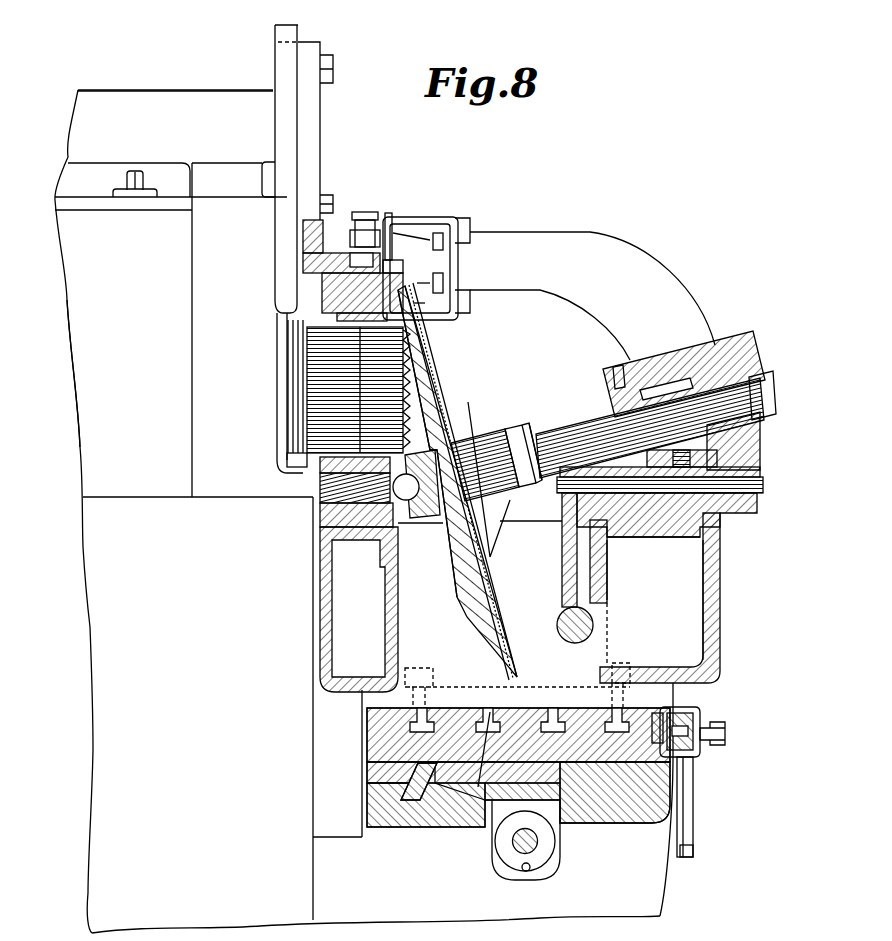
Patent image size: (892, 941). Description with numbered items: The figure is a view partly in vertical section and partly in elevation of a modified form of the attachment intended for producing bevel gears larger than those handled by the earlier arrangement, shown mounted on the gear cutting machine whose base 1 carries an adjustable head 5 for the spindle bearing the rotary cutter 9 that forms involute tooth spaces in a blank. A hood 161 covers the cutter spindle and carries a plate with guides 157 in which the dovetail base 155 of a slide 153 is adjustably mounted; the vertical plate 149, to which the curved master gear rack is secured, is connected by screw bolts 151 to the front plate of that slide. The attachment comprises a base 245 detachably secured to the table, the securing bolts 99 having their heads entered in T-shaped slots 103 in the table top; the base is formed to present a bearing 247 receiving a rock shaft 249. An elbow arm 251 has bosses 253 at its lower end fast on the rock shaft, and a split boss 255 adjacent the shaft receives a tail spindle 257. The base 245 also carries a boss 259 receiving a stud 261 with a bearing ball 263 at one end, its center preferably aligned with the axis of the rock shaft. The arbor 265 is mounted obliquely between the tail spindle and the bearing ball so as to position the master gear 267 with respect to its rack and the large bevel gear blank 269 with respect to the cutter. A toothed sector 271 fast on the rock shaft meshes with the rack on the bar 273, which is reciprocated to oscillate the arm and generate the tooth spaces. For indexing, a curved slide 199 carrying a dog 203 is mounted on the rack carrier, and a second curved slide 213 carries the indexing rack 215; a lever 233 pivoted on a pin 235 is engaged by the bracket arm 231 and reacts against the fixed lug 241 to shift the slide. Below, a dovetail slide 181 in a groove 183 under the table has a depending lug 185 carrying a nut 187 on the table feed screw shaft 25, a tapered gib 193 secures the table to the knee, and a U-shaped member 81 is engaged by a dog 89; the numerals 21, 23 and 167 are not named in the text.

The base 1 is at (90, 547).
The adjustable head 5 is at (702, 715).
The rotary cutter 9 is at (367, 403).
The slide 21 is at (437, 790).
The slide plate 23 is at (463, 800).
The table feed screw shaft 25 is at (523, 848).
The U-shaped member 81 is at (690, 847).
The dog 89 is at (695, 795).
The bolts 99 is at (425, 672).
The T-shaped slots 103 is at (425, 708).
The vertical plate 149 is at (322, 140).
The screw bolts 151 is at (335, 70).
The slide 153 is at (210, 90).
The dovetail base 155 is at (232, 173).
The guides 157 is at (168, 163).
The hood 161 is at (75, 257).
The plug 167 is at (127, 180).
The dovetail slide 181 is at (512, 780).
The groove 183 is at (497, 698).
The lug 185 is at (563, 807).
The nut 187 is at (557, 858).
The tapered gib 193 is at (410, 787).
The curved slide 199 is at (350, 260).
The dog 203 is at (365, 214).
The curved slide 213 is at (350, 303).
The indexing rack 215 is at (413, 303).
The arm 231 is at (412, 218).
The lever 233 is at (396, 240).
The pin 235 is at (360, 247).
The lug 241 is at (398, 268).
The base 245 is at (713, 615).
The bearing 247 is at (417, 283).
The rock shaft 249 is at (703, 527).
The elbow arm 251 is at (640, 268).
The bosses 253 is at (618, 520).
The split boss 255 is at (617, 401).
The tail spindle 257 is at (750, 380).
The boss 259 is at (300, 463).
The stud 261 is at (347, 487).
The bearing ball 263 is at (403, 502).
The arbor 265 is at (545, 443).
The master gear 267 is at (443, 380).
The large bevel gear blank 269 is at (430, 413).
The toothed sector 271 is at (563, 540).
The bar 273 is at (568, 625).